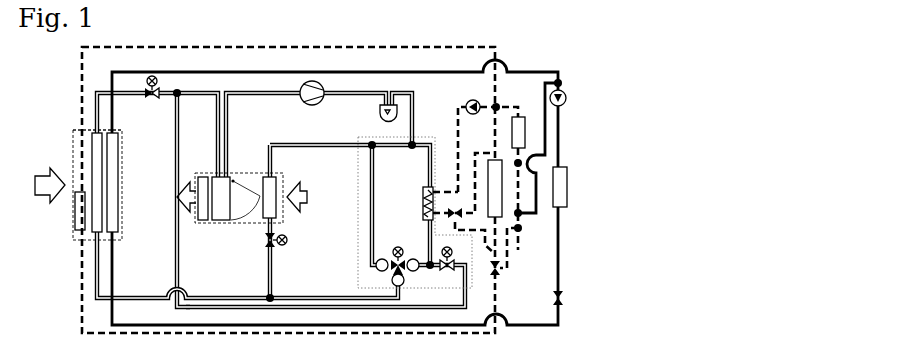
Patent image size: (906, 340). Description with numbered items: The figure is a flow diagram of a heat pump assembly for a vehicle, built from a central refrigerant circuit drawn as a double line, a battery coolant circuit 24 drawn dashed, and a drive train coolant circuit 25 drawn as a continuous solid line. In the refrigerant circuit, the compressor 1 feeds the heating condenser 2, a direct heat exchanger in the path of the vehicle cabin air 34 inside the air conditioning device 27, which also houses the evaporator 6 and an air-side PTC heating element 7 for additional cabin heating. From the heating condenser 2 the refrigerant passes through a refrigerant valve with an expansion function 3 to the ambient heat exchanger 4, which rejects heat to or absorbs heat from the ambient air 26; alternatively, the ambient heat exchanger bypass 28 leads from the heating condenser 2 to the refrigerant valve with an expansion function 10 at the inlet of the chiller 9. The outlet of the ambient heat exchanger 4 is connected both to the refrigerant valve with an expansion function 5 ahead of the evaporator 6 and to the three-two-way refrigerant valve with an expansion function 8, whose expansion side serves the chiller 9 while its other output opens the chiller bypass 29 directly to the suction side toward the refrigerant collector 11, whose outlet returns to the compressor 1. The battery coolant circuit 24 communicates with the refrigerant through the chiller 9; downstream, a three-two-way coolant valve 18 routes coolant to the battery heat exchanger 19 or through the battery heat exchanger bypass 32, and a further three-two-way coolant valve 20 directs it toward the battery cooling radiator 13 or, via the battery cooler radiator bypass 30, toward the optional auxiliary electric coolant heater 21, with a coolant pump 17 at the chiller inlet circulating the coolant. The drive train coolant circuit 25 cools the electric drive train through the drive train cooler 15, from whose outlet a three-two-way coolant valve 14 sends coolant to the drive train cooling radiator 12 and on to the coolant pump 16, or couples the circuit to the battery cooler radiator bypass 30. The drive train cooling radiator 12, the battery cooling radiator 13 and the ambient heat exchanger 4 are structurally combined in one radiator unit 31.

The compressor 1 is at (303, 104).
The heating condenser 2 is at (220, 221).
The refrigerant valve with an expansion function 3 is at (151, 99).
The ambient heat exchanger 4 is at (97, 198).
The refrigerant valve with an expansion function 5 is at (267, 246).
The evaporator 6 is at (265, 219).
The air-side PTC heating element 7 is at (201, 177).
The 3/2-way refrigerant valve with an expansion function 8 is at (390, 271).
The chiller 9 is at (422, 200).
The refrigerant valve with an expansion function 10 is at (447, 274).
The refrigerant collector 11 is at (384, 113).
The drive train cooling radiator 12 is at (115, 208).
The battery cooling radiator 13 is at (75, 231).
The 3/2-way coolant valve 14 is at (562, 300).
The drive train cooler 15 is at (567, 200).
The coolant pump 16 is at (550, 98).
The coolant pump 17 is at (466, 105).
The 3/2-way coolant valve 18 is at (452, 207).
The battery heat exchanger 19 is at (500, 178).
The 3/2-way coolant valve 20 is at (492, 283).
The auxiliary electric coolant heater 21 is at (510, 136).
The battery coolant circuit 24 is at (457, 120).
The drive train coolant circuit 25 is at (560, 113).
The ambient air 26 is at (40, 200).
The air conditioning device 27 is at (245, 196).
The ambient heat exchanger bypass 28 is at (175, 172).
The chiller bypass 29 is at (360, 207).
The battery cooler radiator bypass 30 is at (512, 255).
The radiator unit 31 is at (72, 130).
The battery heat exchanger bypass 32 is at (503, 272).
The vehicle cabin air 34 is at (307, 197).